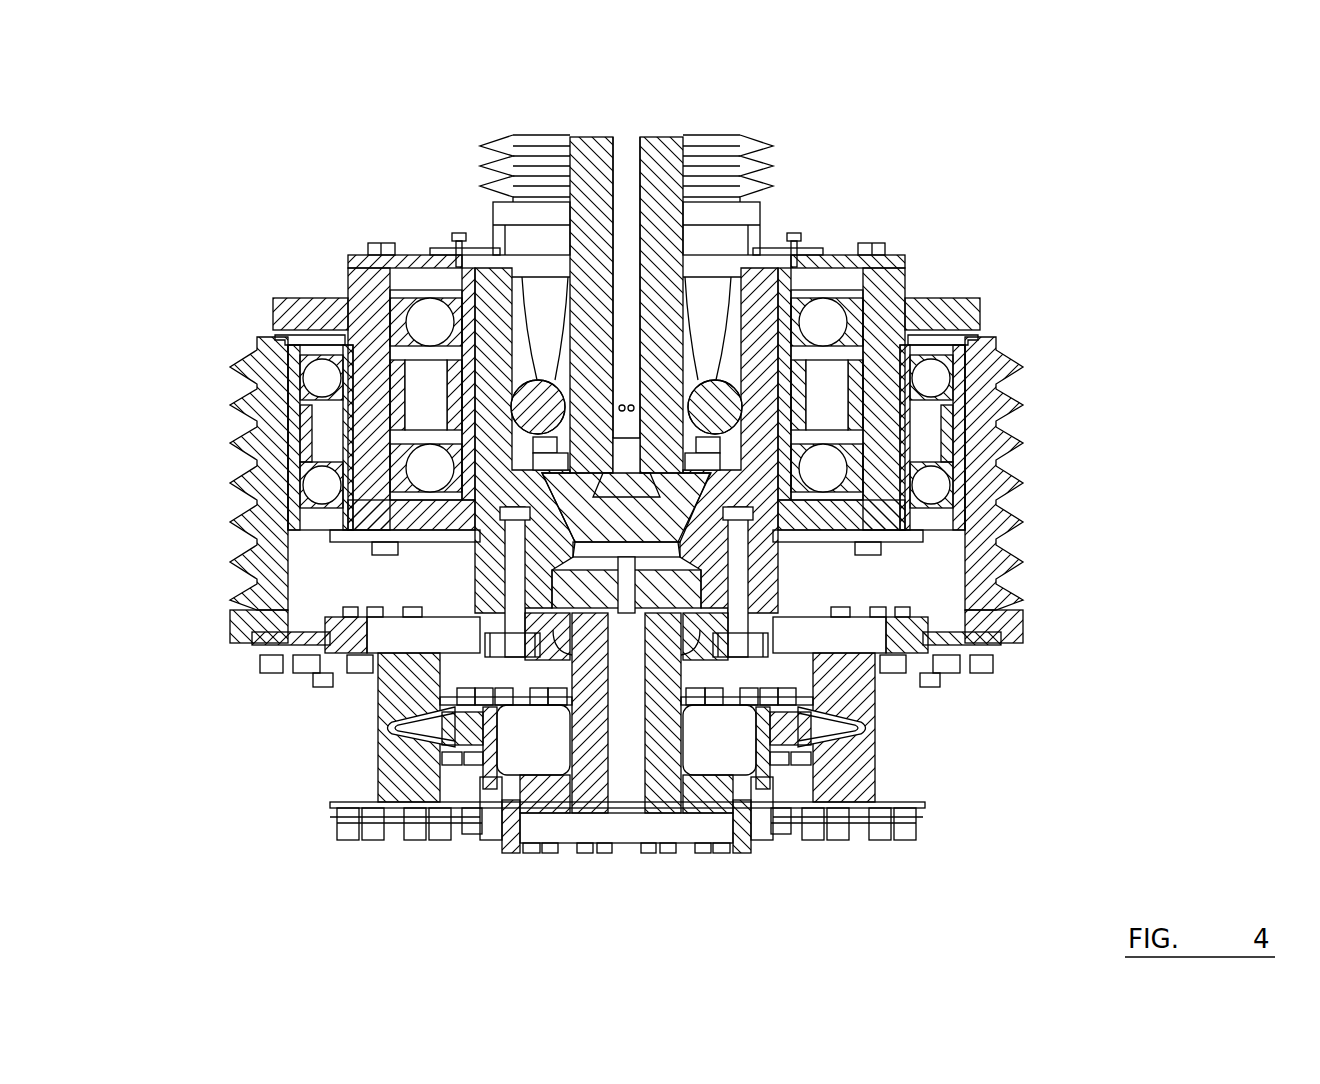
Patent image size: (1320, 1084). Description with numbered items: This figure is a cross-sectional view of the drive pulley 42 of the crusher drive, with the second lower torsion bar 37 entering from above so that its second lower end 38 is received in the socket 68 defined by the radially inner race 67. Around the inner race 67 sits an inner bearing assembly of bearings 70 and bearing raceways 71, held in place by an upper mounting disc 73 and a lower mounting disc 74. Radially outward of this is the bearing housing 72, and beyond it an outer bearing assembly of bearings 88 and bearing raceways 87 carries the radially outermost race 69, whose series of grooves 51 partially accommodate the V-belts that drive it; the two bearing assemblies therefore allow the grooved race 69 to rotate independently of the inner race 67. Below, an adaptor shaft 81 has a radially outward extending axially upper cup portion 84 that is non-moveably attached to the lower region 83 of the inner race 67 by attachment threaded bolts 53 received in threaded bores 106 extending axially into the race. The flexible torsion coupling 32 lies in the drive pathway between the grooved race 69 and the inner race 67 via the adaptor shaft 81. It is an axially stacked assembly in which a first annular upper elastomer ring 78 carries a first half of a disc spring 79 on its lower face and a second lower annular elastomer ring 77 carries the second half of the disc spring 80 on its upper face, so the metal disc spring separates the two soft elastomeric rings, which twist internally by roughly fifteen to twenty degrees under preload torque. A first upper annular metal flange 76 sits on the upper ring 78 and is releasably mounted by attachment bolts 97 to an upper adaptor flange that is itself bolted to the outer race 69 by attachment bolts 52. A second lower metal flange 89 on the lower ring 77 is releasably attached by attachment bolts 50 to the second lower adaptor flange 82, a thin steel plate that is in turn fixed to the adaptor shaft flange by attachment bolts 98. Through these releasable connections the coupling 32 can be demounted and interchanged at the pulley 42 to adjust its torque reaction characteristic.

The flexible torsion coupling 32 is at (365, 745).
The second lower torsion bar 37 is at (660, 163).
The second lower end 38 is at (587, 423).
The drive pulley 42 is at (925, 228).
The attachment bolts 50 is at (372, 840).
The grooves 51 is at (975, 470).
The attachment bolts 52 is at (985, 670).
The attachment threaded bolts 53 is at (730, 650).
The radially inner race 67 is at (462, 245).
The socket 68 is at (722, 310).
The radially outermost race 69 is at (975, 417).
The bearings 70 is at (826, 315).
The bearing raceways 71 is at (848, 290).
The bearing housing 72 is at (345, 285).
The upper mounting disc 73 is at (410, 265).
The lower mounting disc 74 is at (860, 555).
The first upper annular metal flange 76 is at (400, 650).
The second lower annular elastomer ring 77 is at (846, 773).
The first annular upper elastomer ring 78 is at (850, 690).
The first half of disc spring 79 is at (840, 822).
The second half of disc spring 80 is at (420, 703).
The adaptor shaft 81 is at (660, 760).
The second lower adaptor flange 82 is at (790, 838).
The lower region 83 is at (570, 812).
The axially upper cup portion 84 is at (460, 573).
The bearing raceways 87 is at (958, 398).
The bearings 88 is at (935, 372).
The second lower metal flange 89 is at (435, 832).
The attachment bolts 97 is at (931, 678).
The attachment bolts 98 is at (510, 855).
The threaded bores 106 is at (477, 470).